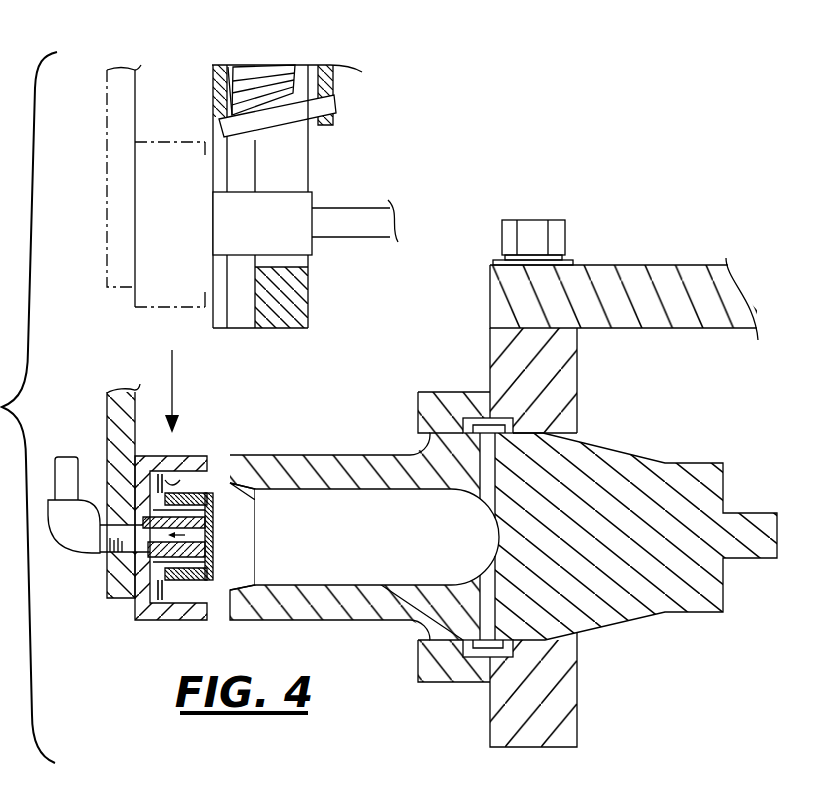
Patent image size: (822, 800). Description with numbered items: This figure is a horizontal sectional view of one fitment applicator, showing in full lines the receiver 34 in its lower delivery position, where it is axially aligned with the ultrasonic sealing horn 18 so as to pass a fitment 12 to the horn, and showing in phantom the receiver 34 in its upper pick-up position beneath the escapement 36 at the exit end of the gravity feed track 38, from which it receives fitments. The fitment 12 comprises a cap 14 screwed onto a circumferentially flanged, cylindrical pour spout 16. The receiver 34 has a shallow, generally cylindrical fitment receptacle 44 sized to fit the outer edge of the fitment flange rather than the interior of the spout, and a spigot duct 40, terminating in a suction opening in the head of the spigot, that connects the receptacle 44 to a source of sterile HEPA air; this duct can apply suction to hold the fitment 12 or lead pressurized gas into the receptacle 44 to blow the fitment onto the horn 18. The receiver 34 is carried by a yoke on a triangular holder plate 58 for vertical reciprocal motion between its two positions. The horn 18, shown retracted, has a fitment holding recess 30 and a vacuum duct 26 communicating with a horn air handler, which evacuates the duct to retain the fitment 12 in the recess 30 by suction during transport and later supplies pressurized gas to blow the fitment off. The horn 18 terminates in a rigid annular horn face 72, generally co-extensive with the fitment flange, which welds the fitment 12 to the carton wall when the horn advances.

The pour spout fitment 12 is at (182, 587).
The cap 14 is at (212, 492).
The pour spout 16 is at (163, 482).
The ultrasonic sealing horn 18 is at (331, 465).
The vacuum duct 26 is at (497, 467).
The fitment holding recess 30 is at (265, 520).
The receiver 34 is at (155, 153).
The escapement 36 is at (220, 175).
The gravity feed track 38 is at (214, 64).
The spigot duct 40 is at (140, 537).
The fitment receptacle 44 is at (181, 478).
The triangular holder plate 58 is at (117, 420).
The annular horn face 72 is at (230, 607).